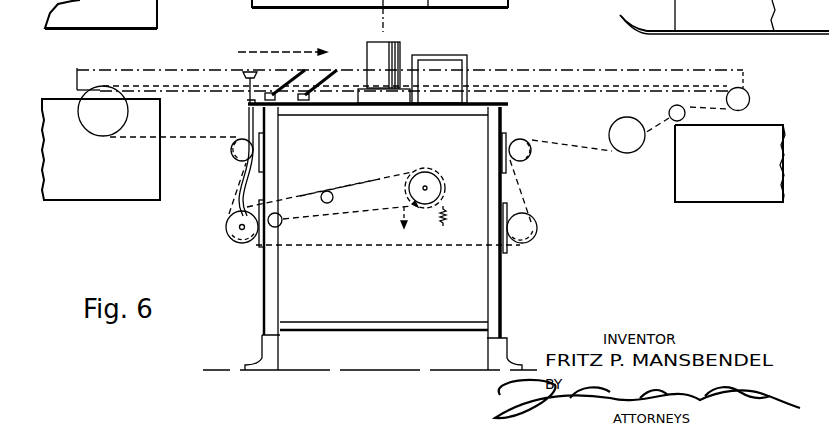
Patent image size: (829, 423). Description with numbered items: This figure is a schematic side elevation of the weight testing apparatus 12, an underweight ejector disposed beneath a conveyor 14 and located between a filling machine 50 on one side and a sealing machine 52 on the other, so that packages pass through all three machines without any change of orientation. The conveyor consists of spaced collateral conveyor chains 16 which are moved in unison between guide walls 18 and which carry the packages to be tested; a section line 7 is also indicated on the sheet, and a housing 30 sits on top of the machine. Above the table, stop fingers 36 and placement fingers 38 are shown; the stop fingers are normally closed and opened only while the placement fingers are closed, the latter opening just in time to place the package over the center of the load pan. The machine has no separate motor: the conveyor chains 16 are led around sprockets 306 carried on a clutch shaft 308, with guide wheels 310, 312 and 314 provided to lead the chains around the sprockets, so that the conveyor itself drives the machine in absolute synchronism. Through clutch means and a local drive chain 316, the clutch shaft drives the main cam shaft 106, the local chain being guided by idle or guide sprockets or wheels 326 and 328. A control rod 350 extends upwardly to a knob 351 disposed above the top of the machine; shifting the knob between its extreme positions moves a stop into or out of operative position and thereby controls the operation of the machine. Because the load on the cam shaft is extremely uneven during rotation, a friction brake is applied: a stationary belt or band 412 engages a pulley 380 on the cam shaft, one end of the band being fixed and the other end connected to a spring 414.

The section line 7 is at (383, 22).
The weight testing apparatus 12 is at (508, 120).
The conveyor 14 is at (578, 70).
The conveyor chains 16 is at (517, 83).
The guide walls 18 is at (490, 67).
The housing 30 is at (437, 55).
The stop fingers 36 is at (295, 67).
The placement fingers 38 is at (338, 67).
The filling machine 50 is at (65, 30).
The sealing machine 52 is at (752, 125).
The main cam shaft 106 is at (427, 186).
The sprockets 306 is at (232, 232).
The clutch shaft 308 is at (241, 232).
The guide wheel 310 is at (233, 152).
The guide wheel 312 is at (533, 240).
The guide wheel 314 is at (527, 158).
The local drive chain 316 is at (355, 181).
The guide sprocket 326 is at (283, 220).
The guide sprocket 328 is at (335, 197).
The control rod 350 is at (248, 122).
The knob 351 is at (255, 72).
The pulley 380 is at (443, 174).
The brake band 412 is at (443, 201).
The spring 414 is at (447, 217).